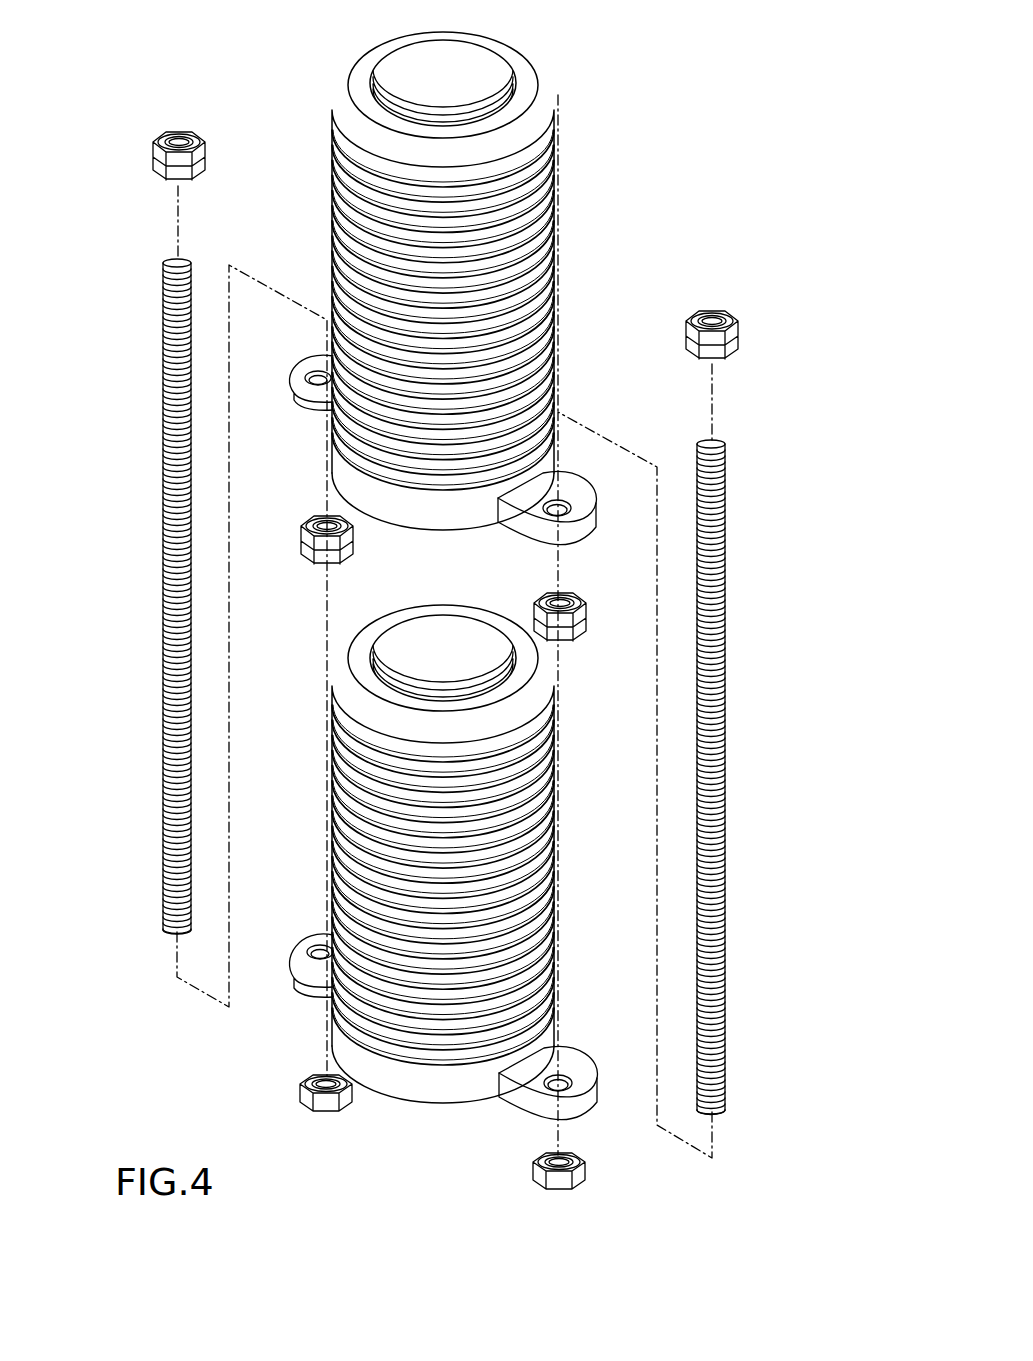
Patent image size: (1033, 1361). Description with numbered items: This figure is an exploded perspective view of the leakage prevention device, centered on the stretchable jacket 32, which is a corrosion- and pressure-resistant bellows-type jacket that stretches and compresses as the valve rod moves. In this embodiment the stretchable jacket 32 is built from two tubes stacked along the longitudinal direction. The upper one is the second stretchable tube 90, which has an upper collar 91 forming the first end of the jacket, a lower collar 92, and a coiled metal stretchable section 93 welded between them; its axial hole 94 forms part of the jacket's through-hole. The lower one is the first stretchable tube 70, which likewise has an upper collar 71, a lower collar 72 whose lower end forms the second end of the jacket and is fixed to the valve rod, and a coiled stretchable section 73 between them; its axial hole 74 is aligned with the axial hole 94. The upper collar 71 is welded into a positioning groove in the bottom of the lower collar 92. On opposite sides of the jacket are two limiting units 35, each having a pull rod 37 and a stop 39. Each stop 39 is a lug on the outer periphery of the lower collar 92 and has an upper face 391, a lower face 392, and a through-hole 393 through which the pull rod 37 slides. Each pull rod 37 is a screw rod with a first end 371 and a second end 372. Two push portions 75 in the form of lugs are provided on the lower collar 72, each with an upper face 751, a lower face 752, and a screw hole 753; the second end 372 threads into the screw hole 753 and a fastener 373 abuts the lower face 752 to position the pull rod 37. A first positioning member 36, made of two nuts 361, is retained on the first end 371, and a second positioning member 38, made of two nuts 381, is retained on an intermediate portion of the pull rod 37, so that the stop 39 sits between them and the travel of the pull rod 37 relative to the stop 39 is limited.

The stretchable jacket 32 is at (475, 302).
The second stretchable tube 90 is at (475, 310).
The upper collar 91 is at (514, 85).
The lower collar 92 is at (462, 530).
The stretchable section 93 is at (540, 243).
The axial hole 94 is at (498, 86).
The first stretchable tube 70 is at (470, 869).
The upper collar 71 is at (441, 645).
The lower collar 72 is at (410, 1100).
The stretchable section 73 is at (540, 855).
The axial hole 74 is at (425, 647).
The stop 39 is at (443, 448).
The upper face 391 is at (586, 518).
The lower face 392 is at (565, 547).
The through-hole 393 is at (320, 372).
The push portion 75 is at (447, 1029).
The upper face 751 is at (590, 1090).
The lower face 752 is at (572, 1125).
The screw hole 753 is at (316, 948).
The limiting unit 35 is at (453, 674).
The pull rod 37 is at (165, 541).
The first end 371 is at (176, 265).
The second end 372 is at (165, 918).
The first positioning member 36 is at (445, 233).
The nut 361 is at (735, 322).
The second positioning member 38 is at (452, 578).
The nut 381 is at (583, 612).
The fastener 373 is at (305, 1102).